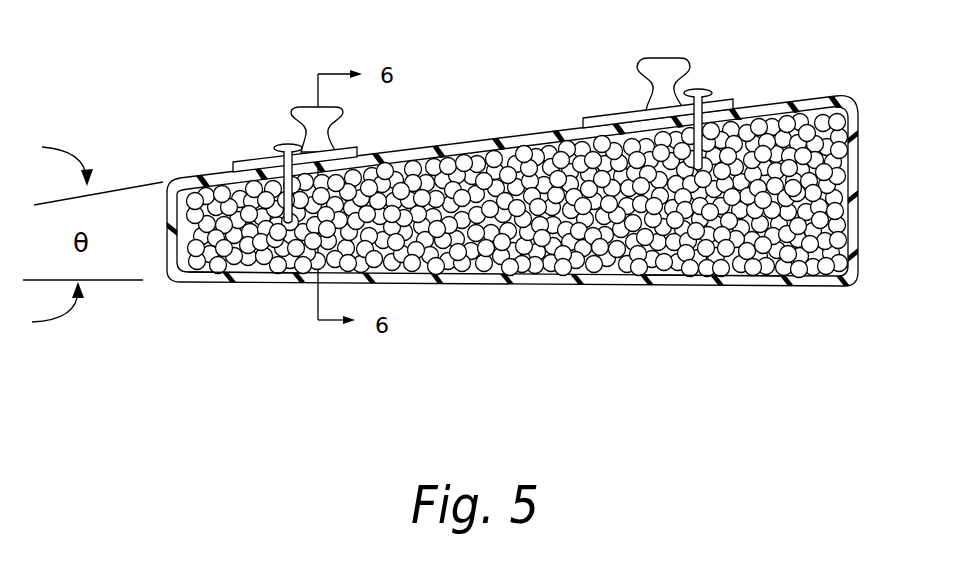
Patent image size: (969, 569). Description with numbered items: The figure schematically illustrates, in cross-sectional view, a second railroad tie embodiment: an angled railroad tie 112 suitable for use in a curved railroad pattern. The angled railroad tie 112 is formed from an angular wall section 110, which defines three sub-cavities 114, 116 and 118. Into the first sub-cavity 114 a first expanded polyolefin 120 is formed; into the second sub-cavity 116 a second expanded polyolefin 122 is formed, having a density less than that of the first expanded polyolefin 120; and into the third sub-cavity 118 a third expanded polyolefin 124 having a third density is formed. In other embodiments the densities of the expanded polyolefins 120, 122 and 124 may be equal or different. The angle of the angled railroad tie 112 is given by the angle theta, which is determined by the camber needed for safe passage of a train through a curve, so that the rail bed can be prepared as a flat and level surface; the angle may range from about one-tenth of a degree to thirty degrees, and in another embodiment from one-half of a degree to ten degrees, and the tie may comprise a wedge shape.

The angular wall section 110 is at (785, 95).
The angled railroad tie 112 is at (268, 357).
The sub-cavity 114 is at (271, 232).
The sub-cavity 116 is at (517, 196).
The sub-cavity 118 is at (790, 183).
The first expanded polyolefin 120 is at (218, 282).
The second expanded polyolefin 122 is at (493, 198).
The third expanded polyolefin 124 is at (742, 240).